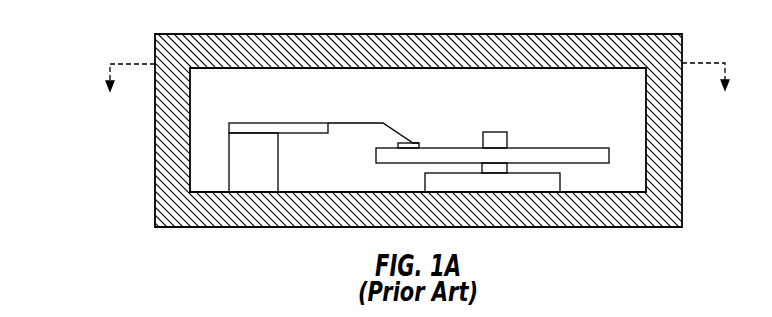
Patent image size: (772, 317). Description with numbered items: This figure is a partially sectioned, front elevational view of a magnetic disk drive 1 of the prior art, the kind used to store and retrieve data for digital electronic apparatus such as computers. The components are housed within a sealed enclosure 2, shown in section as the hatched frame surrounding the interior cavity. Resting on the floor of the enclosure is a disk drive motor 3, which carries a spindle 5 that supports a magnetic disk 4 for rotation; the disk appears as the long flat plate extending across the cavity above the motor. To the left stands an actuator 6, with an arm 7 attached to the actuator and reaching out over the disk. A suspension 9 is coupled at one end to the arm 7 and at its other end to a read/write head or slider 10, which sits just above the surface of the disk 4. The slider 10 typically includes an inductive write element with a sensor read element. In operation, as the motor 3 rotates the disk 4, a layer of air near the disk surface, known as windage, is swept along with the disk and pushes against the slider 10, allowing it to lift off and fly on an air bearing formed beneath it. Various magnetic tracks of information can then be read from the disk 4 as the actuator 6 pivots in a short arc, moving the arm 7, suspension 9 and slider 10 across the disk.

The magnetic disk drive 1 is at (112, 41).
The sealed enclosure 2 is at (302, 194).
The disk drive motor 3 is at (540, 182).
The magnetic disk 4 is at (552, 152).
The spindle 5 is at (495, 137).
The actuator 6 is at (278, 175).
The arm 7 is at (295, 125).
The suspension 9 is at (363, 122).
The slider 10 is at (420, 143).